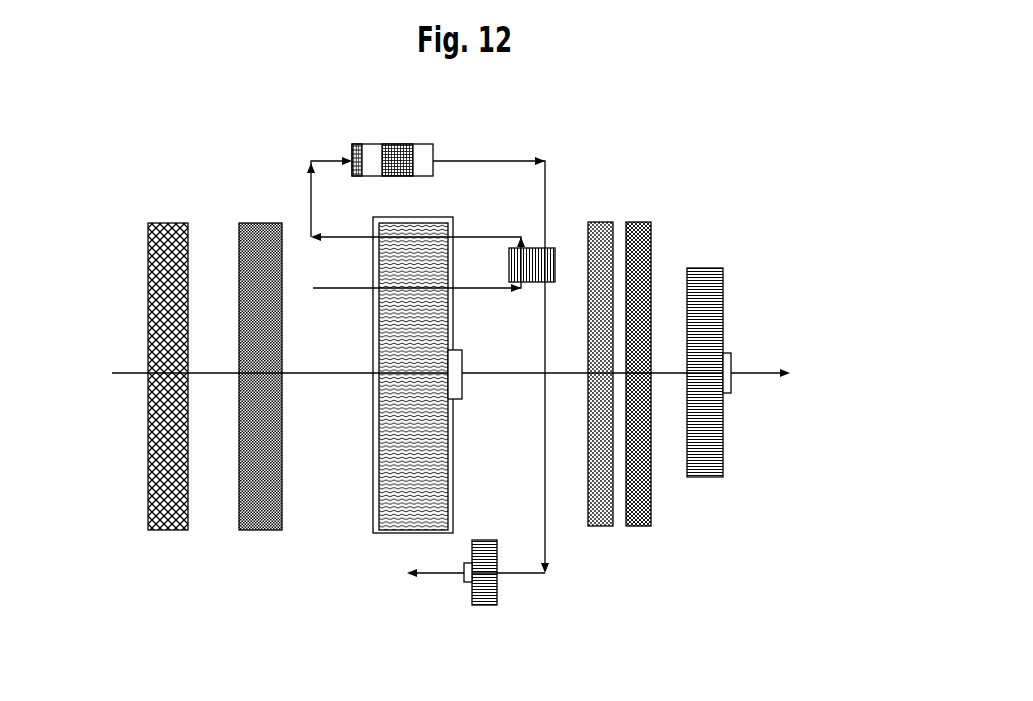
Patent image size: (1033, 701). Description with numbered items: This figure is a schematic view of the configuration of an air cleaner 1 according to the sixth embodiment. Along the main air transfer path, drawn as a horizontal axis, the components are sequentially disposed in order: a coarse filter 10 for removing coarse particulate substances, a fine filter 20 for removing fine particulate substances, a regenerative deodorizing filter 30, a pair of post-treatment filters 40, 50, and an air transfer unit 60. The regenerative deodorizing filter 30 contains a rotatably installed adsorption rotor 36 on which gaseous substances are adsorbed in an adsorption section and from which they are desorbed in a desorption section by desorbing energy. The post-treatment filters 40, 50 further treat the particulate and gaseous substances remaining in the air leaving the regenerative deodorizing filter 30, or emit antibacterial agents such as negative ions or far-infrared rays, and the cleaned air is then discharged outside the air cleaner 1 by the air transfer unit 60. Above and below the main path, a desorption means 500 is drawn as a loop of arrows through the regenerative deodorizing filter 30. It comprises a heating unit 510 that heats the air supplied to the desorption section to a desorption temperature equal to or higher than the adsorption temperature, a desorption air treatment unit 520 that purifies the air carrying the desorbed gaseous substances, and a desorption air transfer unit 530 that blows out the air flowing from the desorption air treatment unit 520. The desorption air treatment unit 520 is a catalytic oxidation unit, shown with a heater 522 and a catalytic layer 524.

The air cleaner 1 is at (760, 204).
The coarse filter 10 is at (168, 530).
The fine filter 20 is at (260, 530).
The regenerative deodorizing filter 30 is at (449, 419).
The adsorption rotor 36 is at (440, 470).
The post-treatment filter 40 is at (602, 526).
The post-treatment filter 50 is at (643, 526).
The air transfer unit 60 is at (708, 477).
The desorption means 500 is at (505, 153).
The heating unit 510 is at (548, 250).
The desorption air treatment unit 520 is at (416, 124).
The heater 522 is at (355, 144).
The catalytic layer 524 is at (412, 160).
The desorption air transfer unit 530 is at (492, 593).